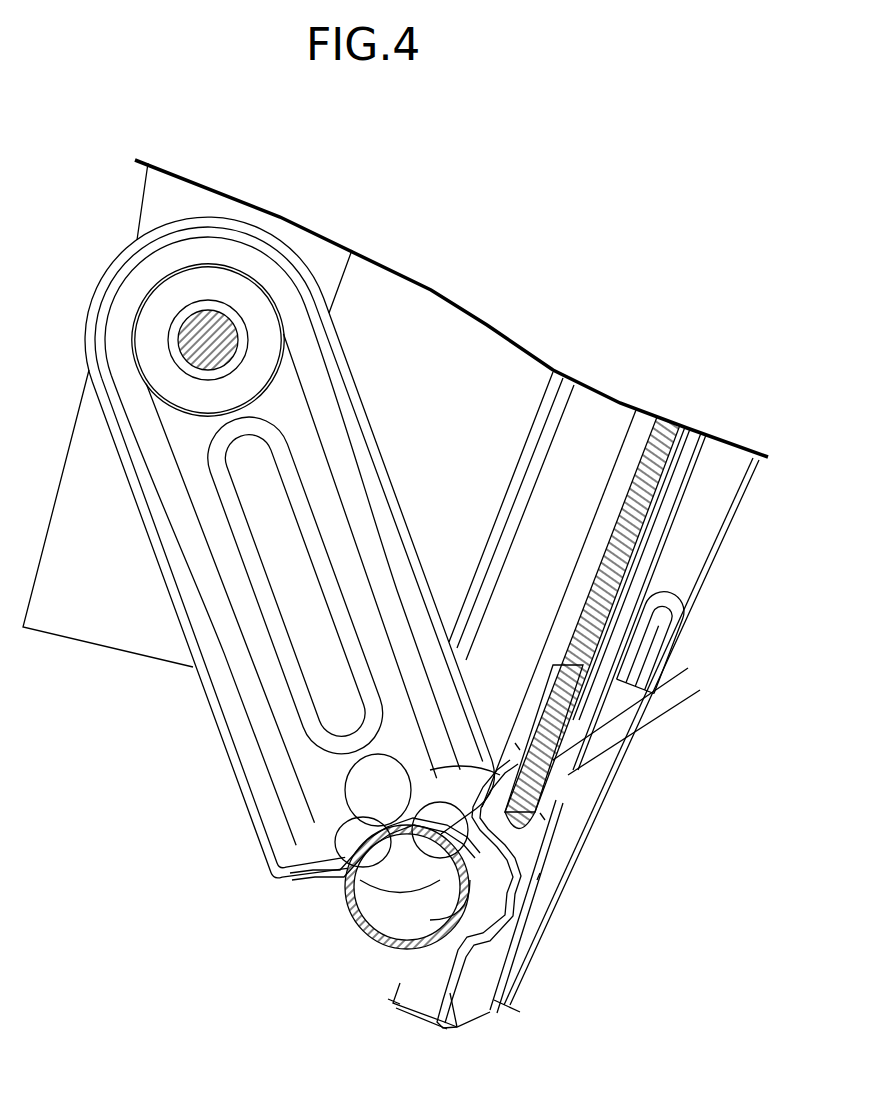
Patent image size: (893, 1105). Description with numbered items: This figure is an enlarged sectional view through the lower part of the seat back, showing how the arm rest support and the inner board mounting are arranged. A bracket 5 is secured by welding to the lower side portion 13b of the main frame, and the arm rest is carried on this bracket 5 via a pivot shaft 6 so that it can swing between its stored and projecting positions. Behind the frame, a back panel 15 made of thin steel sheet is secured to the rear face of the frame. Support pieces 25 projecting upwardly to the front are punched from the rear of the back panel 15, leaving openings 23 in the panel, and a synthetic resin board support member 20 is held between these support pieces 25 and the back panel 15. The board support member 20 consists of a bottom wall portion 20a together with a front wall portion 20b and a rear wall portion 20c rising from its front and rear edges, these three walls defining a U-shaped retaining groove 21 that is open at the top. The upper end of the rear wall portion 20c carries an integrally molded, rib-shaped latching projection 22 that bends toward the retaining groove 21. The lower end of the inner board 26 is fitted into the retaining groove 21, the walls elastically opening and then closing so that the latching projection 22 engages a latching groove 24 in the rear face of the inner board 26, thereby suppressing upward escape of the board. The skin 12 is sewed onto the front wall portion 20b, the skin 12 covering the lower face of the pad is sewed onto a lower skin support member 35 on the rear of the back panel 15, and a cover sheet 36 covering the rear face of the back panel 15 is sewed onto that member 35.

The bracket 5 is at (338, 428).
The pivot shaft 6 is at (232, 342).
The skin 12 is at (567, 875).
The lower side portion 13b is at (353, 913).
The back panel 15 is at (673, 500).
The board support member 20 is at (519, 706).
The bottom wall portion 20a is at (540, 873).
The front wall portion 20b is at (515, 743).
The rear wall portion 20c is at (540, 813).
The retaining groove 21 is at (467, 797).
The latching projection 22 is at (540, 690).
The opening 23 is at (557, 755).
The latching groove 24 is at (537, 807).
The support piece 25 is at (420, 797).
The inner board 26 is at (642, 490).
The lower skin support member 35 is at (670, 630).
The cover sheet 36 is at (703, 578).